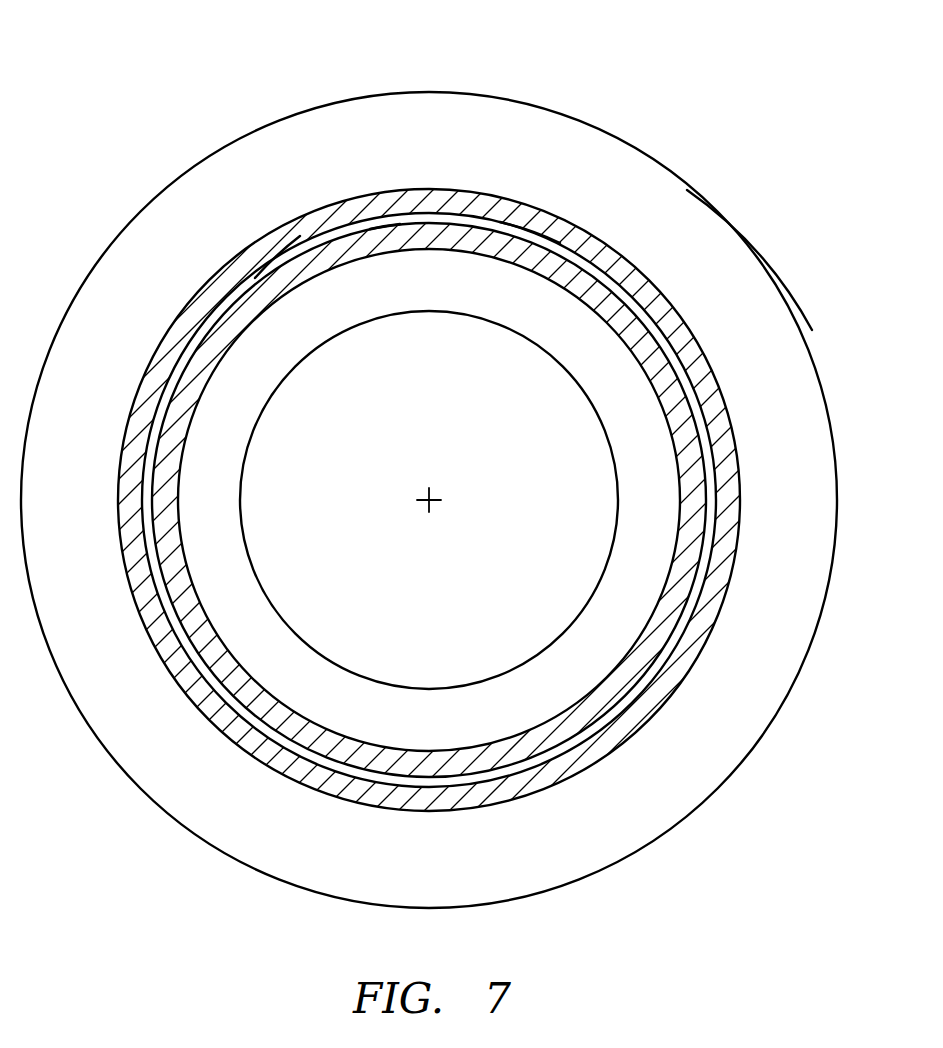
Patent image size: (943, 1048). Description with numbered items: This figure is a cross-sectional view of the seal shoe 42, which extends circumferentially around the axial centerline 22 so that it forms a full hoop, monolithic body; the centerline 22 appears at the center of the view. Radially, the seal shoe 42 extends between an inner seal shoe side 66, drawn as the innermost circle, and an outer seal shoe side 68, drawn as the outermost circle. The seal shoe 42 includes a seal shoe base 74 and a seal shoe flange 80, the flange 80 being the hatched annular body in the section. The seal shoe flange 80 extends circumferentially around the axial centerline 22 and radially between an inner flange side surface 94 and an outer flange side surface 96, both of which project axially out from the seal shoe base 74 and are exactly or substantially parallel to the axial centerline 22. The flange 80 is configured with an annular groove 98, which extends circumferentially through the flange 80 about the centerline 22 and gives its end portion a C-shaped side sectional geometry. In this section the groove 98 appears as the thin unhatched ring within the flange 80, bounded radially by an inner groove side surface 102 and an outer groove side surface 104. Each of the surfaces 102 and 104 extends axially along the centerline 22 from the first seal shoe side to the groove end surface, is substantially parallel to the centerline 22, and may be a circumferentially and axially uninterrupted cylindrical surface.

The axial centerline 22 is at (432, 503).
The seal shoe 42 is at (760, 122).
The inner seal shoe side 66 is at (470, 312).
The outer seal shoe side 68 is at (500, 92).
The seal shoe base 74 is at (763, 245).
The seal shoe flange 80 is at (625, 249).
The inner flange side surface 94 is at (318, 274).
The outer flange side surface 96 is at (298, 214).
The groove 98 is at (478, 222).
The inner groove side surface 102 is at (413, 215).
The outer groove side surface 104 is at (384, 209).